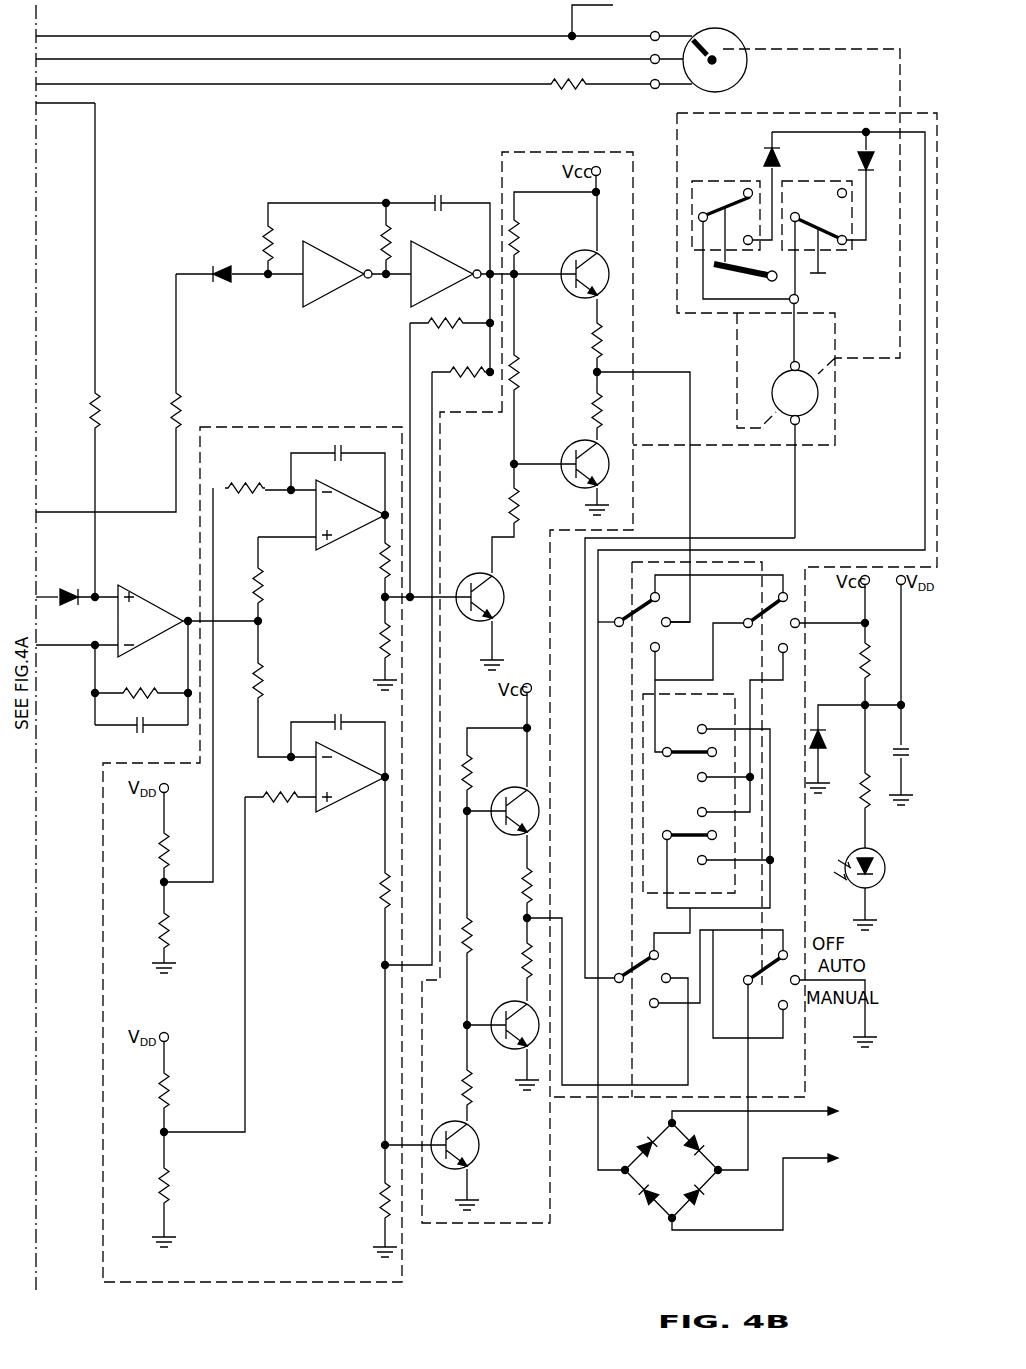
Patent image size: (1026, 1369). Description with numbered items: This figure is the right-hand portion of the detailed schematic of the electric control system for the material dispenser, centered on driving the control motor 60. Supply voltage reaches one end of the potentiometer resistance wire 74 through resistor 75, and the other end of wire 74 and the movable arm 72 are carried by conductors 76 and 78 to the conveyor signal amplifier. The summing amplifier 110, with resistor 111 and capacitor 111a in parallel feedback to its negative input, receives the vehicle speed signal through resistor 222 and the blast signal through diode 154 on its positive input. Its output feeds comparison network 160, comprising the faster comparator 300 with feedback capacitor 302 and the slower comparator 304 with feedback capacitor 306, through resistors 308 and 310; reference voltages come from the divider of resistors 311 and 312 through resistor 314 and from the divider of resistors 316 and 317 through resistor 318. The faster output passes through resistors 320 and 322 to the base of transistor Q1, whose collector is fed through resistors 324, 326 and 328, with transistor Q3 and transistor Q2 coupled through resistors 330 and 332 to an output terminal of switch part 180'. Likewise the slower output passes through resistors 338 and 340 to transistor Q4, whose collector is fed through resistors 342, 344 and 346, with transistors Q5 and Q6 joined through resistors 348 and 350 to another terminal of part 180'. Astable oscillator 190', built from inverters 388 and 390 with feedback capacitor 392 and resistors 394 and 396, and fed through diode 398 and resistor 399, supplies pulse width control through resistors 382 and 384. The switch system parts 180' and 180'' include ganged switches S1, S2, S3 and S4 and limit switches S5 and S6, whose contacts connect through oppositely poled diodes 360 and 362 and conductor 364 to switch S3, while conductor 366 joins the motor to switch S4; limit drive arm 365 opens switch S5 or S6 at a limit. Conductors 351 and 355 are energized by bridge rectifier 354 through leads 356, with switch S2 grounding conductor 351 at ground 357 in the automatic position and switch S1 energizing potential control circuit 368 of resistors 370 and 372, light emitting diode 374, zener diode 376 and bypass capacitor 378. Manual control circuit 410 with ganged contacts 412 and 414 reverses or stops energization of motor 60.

The control motor 60 is at (818, 398).
The arm 72 is at (722, 56).
The potentiometer resistance wire 74 is at (736, 33).
The resistor 75 is at (568, 88).
The conductor 76 is at (484, 36).
The conductor 78 is at (508, 59).
The summing amplifier 110 is at (149, 611).
The resistor 111 is at (150, 676).
The capacitor 111a is at (140, 732).
The diode 154 is at (64, 590).
The comparison network 160 is at (262, 427).
The switch system part 180' is at (704, 466).
The switch system part 180'' is at (707, 129).
The astable oscillator 190' is at (346, 166).
The resistor 222 is at (100, 404).
The faster comparator circuit 300 is at (350, 525).
The feedback capacitor 302 is at (336, 446).
The slower comparator network 304 is at (350, 787).
The feedback capacitor 306 is at (338, 714).
The resistor 308 is at (264, 590).
The resistor 310 is at (264, 672).
The resistor 311 is at (160, 838).
The resistor 312 is at (160, 918).
The resistor 314 is at (262, 482).
The resistor 316 is at (168, 1098).
The resistor 317 is at (168, 1200).
The resistor 318 is at (290, 804).
The output resistor 320 is at (380, 568).
The output resistor 322 is at (380, 644).
The resistor 324 is at (510, 505).
The resistor 326 is at (518, 372).
The resistor 328 is at (518, 244).
The resistor 330 is at (592, 408).
The resistor 332 is at (592, 336).
The output resistor 338 is at (380, 884).
The output resistor 340 is at (380, 1200).
The resistor 342 is at (462, 1088).
The resistor 344 is at (476, 942).
The resistor 346 is at (474, 774).
The resistor 348 is at (522, 976).
The resistor 350 is at (522, 882).
The conductor 351 is at (748, 1134).
The bridge rectifier 354 is at (653, 1171).
The conductor 355 is at (598, 1140).
The leads 356 is at (765, 1177).
The ground 357 is at (868, 1030).
The diode 360 is at (770, 142).
The diode 362 is at (858, 152).
The conductor 364 is at (925, 465).
The limit drive arm 365 is at (736, 278).
The conductor 366 is at (770, 538).
The potential control circuit 368 is at (822, 606).
The resistor 370 is at (860, 668).
The resistor 372 is at (858, 790).
The light emitting diode 374 is at (878, 870).
The zener diode 376 is at (824, 752).
The bypass capacitor 378 is at (904, 746).
The resistor 382 is at (448, 318).
The resistor 384 is at (466, 368).
The inverter 388 is at (348, 292).
The inverter 390 is at (444, 262).
The capacitor 392 is at (442, 200).
The resistor 394 is at (262, 238).
The resistor 396 is at (380, 236).
The diode 398 is at (228, 282).
The resistor 399 is at (182, 404).
The manual motor control circuit 410 is at (643, 736).
The ganged contact 412 is at (718, 803).
The ganged contact 414 is at (715, 847).
The transistor Q1 is at (452, 599).
The transistor Q2 is at (571, 464).
The transistor Q3 is at (571, 272).
The transistor Q4 is at (468, 1145).
The transistor Q5 is at (521, 1017).
The transistor Q6 is at (521, 802).
The switch S1 is at (762, 696).
The switch S2 is at (795, 1050).
The switch S3 is at (690, 663).
The switch S4 is at (695, 965).
The limit switch S5 is at (714, 180).
The limit switch S6 is at (852, 240).